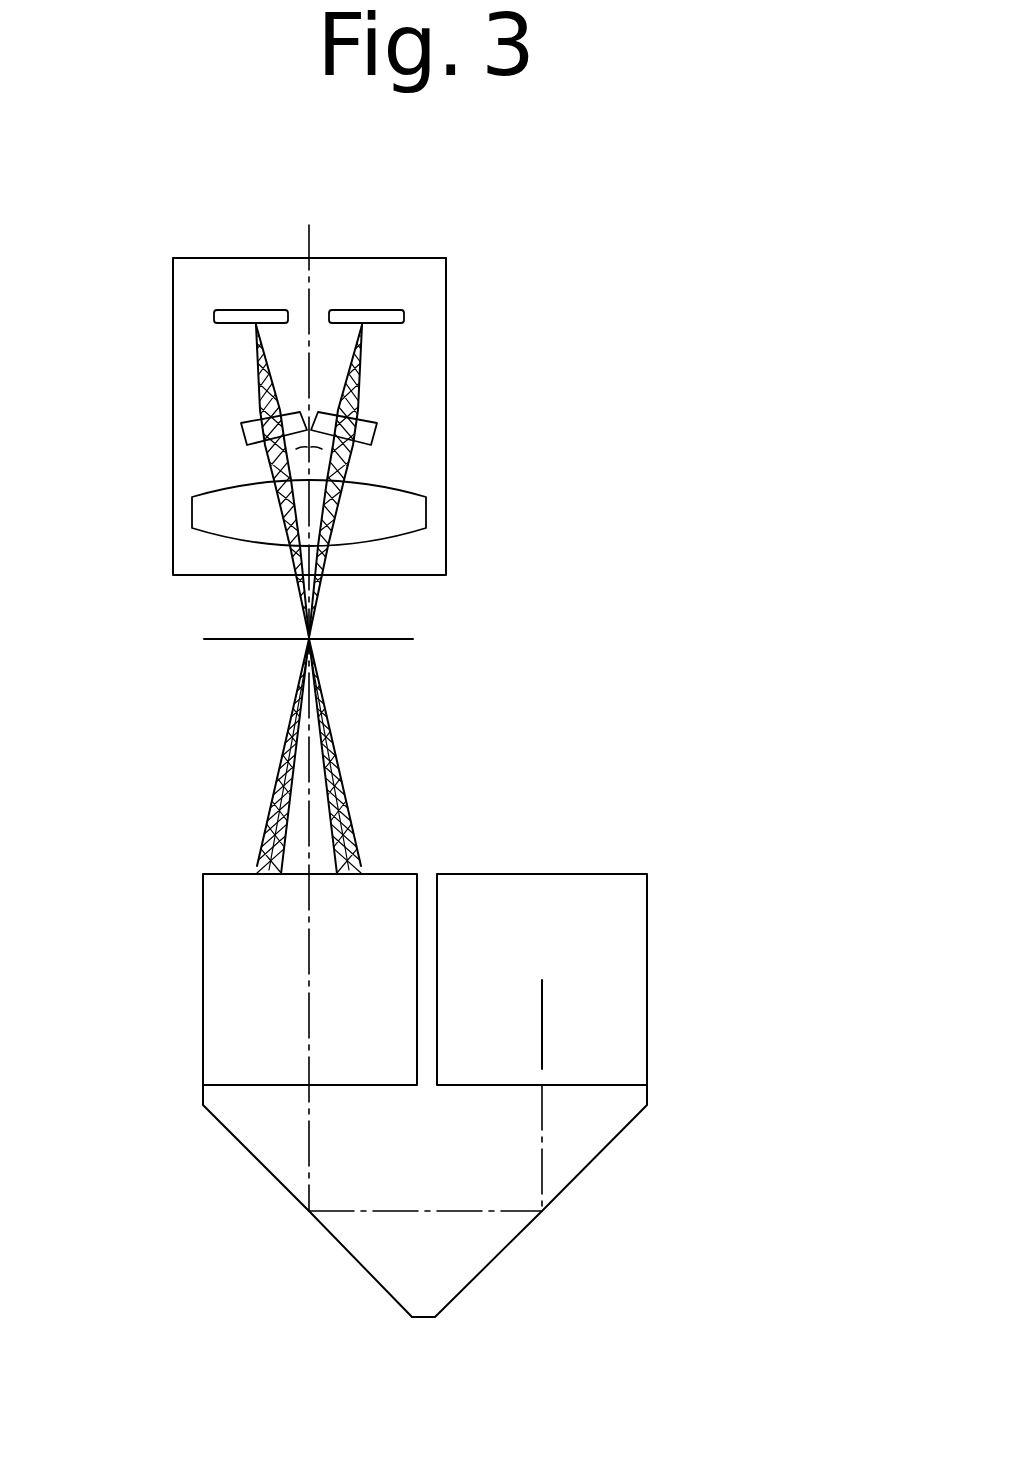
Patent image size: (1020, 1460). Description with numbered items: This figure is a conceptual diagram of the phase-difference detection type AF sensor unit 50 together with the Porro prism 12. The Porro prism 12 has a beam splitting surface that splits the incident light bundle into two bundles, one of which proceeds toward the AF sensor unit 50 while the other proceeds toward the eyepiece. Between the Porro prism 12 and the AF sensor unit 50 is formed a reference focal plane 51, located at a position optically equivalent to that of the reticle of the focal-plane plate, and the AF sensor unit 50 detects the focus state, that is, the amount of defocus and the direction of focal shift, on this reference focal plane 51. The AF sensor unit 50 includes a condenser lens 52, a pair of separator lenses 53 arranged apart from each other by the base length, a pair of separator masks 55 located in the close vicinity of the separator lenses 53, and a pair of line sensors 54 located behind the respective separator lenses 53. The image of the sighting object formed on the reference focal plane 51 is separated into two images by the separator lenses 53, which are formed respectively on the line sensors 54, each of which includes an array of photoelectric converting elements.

The Porro prism 12 is at (747, 1085).
The AF sensor unit 50 is at (490, 303).
The reference focal plane 51 is at (378, 641).
The condenser lens 52 is at (407, 517).
The pair of separator lenses 53 is at (241, 428).
The pair of line sensors 54 is at (262, 309).
The pair of separator masks 55 is at (257, 457).